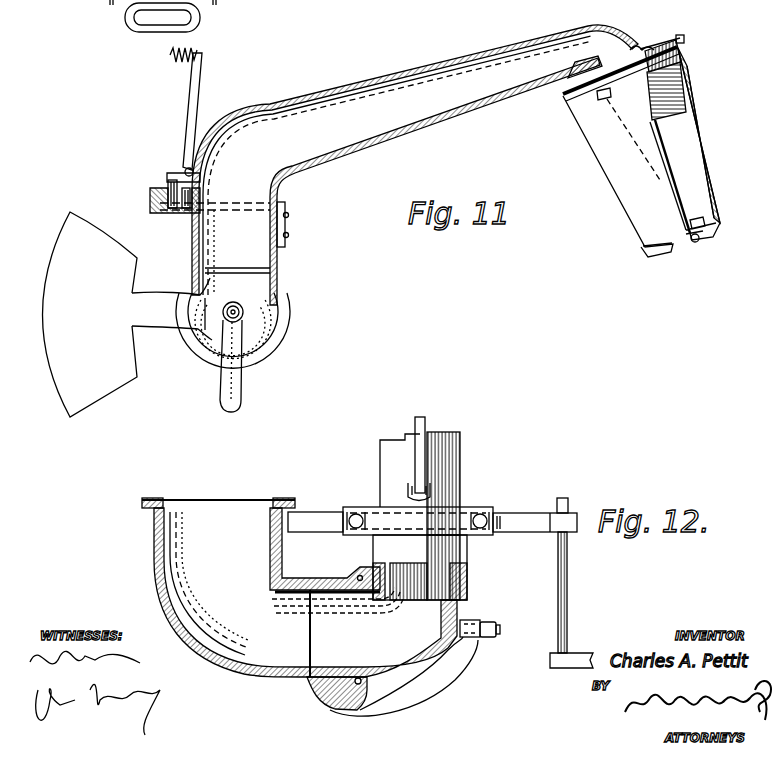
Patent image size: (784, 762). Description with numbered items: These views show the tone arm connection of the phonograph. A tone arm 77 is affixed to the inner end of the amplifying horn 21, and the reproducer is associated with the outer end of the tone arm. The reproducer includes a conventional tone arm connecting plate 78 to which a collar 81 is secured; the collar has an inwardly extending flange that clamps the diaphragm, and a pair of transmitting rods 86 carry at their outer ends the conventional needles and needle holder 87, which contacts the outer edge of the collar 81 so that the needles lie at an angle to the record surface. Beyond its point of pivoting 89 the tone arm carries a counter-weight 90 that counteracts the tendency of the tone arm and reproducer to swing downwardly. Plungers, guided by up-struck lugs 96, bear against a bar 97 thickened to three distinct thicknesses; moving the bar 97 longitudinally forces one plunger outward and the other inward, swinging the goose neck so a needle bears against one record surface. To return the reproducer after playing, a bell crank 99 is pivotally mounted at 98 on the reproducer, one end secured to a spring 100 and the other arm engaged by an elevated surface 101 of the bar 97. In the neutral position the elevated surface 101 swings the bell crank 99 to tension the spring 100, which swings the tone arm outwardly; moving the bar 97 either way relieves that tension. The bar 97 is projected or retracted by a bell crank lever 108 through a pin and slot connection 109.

In FIG. 12, the amplifying horn 21 is at (156, 538).
In FIG. 11, the tone arm 77 is at (452, 60).
In FIG. 12, the tone arm 77 is at (450, 467).
In FIG. 11, the tone arm connecting plate 78 is at (655, 44).
In FIG. 11, the collar 81 is at (655, 168).
In FIG. 11, the transmitting rods 86 is at (687, 207).
In FIG. 11, the needle holder 87 is at (698, 241).
In FIG. 11, the point of pivoting 89 is at (243, 316).
In FIG. 12, the point of pivoting 89 is at (481, 638).
In FIG. 11, the counter-weight 90 is at (128, 314).
In FIG. 12, the up-struck lugs 96 is at (349, 516).
In FIG. 11, the bar 97 is at (152, 201).
In FIG. 12, the bar 97 is at (520, 516).
In FIG. 11, the pivot 98 is at (186, 169).
In FIG. 11, the bell crank 99 is at (190, 106).
In FIG. 12, the bell crank 99 is at (422, 428).
In FIG. 11, the spring 100 is at (195, 47).
In FIG. 11, the elevated surface 101 is at (170, 184).
In FIG. 12, the elevated surface 101 is at (408, 507).
In FIG. 12, the bell crank lever 108 is at (563, 668).
In FIG. 12, the pin and slot connection 109 is at (570, 636).